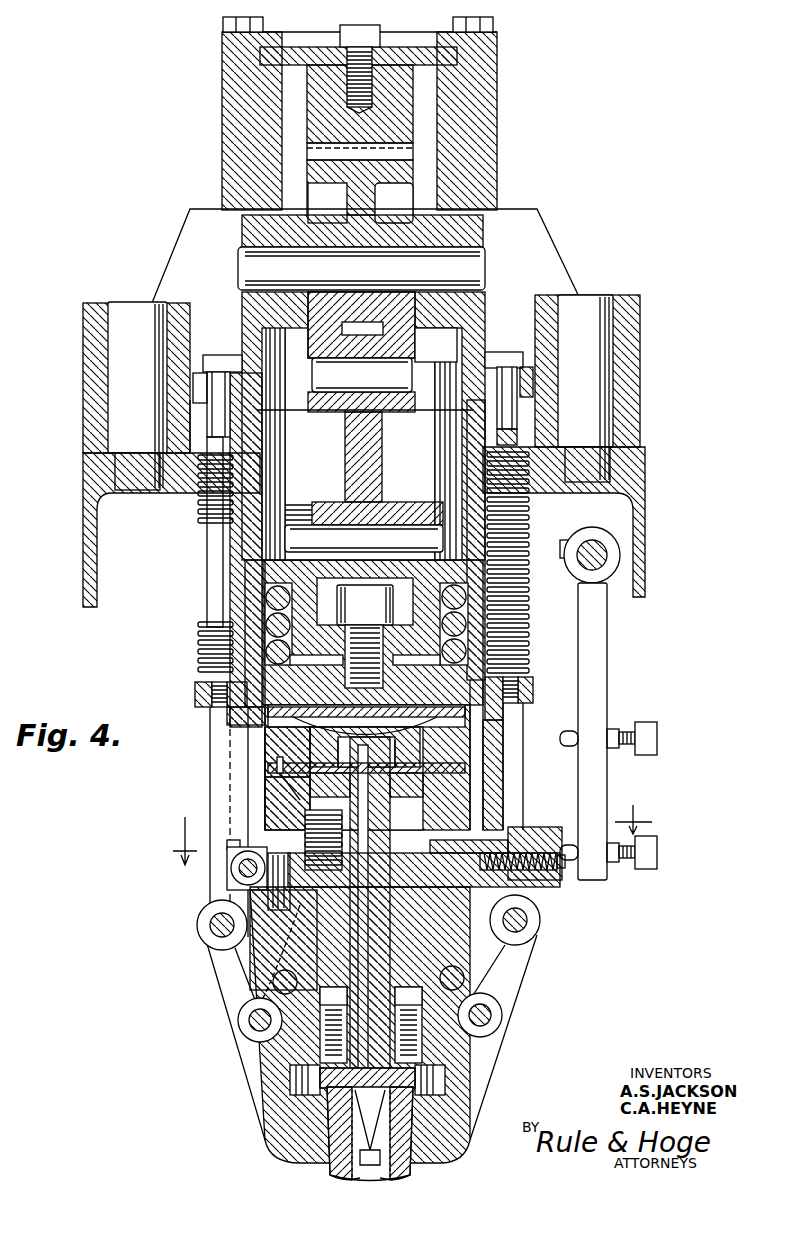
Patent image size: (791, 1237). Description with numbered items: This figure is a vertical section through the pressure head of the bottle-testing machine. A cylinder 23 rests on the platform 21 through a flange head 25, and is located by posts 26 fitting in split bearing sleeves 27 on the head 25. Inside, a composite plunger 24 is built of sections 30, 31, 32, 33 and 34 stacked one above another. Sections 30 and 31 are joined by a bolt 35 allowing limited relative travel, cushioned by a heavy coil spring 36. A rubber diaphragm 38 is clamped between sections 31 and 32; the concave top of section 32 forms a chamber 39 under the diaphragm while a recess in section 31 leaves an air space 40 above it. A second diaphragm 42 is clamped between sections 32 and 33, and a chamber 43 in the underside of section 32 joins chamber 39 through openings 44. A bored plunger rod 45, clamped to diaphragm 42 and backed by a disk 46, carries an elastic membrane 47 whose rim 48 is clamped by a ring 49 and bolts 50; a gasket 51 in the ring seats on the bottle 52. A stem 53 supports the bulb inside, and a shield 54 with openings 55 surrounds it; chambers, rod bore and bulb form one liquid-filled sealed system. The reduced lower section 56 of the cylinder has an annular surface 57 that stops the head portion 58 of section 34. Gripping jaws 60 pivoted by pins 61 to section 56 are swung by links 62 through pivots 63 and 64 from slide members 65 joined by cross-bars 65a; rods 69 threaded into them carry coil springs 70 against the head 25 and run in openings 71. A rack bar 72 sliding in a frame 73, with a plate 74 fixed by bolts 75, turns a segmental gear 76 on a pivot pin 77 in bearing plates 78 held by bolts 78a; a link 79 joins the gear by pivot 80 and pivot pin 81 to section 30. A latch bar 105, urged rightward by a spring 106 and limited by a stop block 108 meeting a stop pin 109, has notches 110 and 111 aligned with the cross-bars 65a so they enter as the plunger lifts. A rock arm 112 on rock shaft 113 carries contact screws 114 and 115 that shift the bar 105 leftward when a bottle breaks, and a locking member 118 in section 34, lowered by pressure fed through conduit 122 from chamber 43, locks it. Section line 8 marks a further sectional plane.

The platform 21 is at (635, 462).
The cylinder 23 is at (255, 568).
The composite plunger 24 is at (246, 752).
The flange portion or head 25 is at (188, 448).
The posts 26 is at (130, 445).
The split bearing sleeves 27 is at (100, 368).
The plunger section 30 is at (288, 600).
The plunger section 31 is at (262, 712).
The plunger section 32 is at (270, 733).
The plunger section 33 is at (265, 792).
The plunger section 34 is at (273, 984).
The bolt 35 is at (365, 633).
The heavy coil spring 36 is at (270, 616).
The diaphragm 38 is at (502, 718).
The chamber 39 is at (366, 719).
The air space 40 is at (520, 666).
The flexible diaphragm 42 is at (490, 769).
The chamber 43 is at (455, 745).
The openings 44 is at (365, 747).
The plunger rod 45 is at (440, 812).
The disk 46 is at (440, 796).
The membrane 47 is at (330, 1150).
The horizontal rim 48 is at (318, 1032).
The ring 49 is at (320, 1080).
The bolts 50 is at (318, 1067).
The rubber sealing gasket 51 is at (340, 1090).
The bottle 52 is at (330, 1172).
The stem 53 is at (420, 1176).
The cylindrical shield 54 is at (350, 1118).
The openings 55 is at (402, 1102).
The integral section 56 is at (470, 1003).
The annular horizontal top surface 57 is at (503, 940).
The head portion 58 is at (520, 880).
The bottle gripping jaws 60 is at (472, 1060).
The pins 61 is at (250, 978).
The links 62 is at (245, 992).
The pivot 63 is at (238, 1026).
The pivot 64 is at (200, 927).
The vertical slide member 65 is at (218, 878).
The cross-bar 65a is at (198, 696).
The vertical rods 69 is at (215, 544).
The coil springs 70 is at (575, 555).
The openings 71 is at (215, 430).
The horizontal rack bar 72 is at (400, 107).
The supporting frame 73 is at (490, 145).
The plate 74 is at (396, 60).
The bolts 75 is at (350, 33).
The segmental gear 76 is at (388, 173).
The pivot pin 77 is at (470, 275).
The bearing plates 78 is at (240, 236).
The bolts 78a is at (495, 365).
The link 79 is at (380, 465).
The pivot 80 is at (400, 379).
The pivot pin 81 is at (388, 522).
The latch bar 105 is at (578, 875).
The coil spring 106 is at (535, 855).
The stop block 108 is at (240, 872).
The stop pin 109 is at (300, 862).
The notch 110 is at (500, 836).
The notch 111 is at (228, 845).
The rock arm 112 is at (592, 662).
The horizontal rock shaft 113 is at (602, 588).
The contact screw 114 is at (657, 852).
The contact screw 115 is at (657, 740).
The locking bar 118 is at (300, 925).
The conduit 122 is at (300, 806).
The section line 8 is at (404, 831).